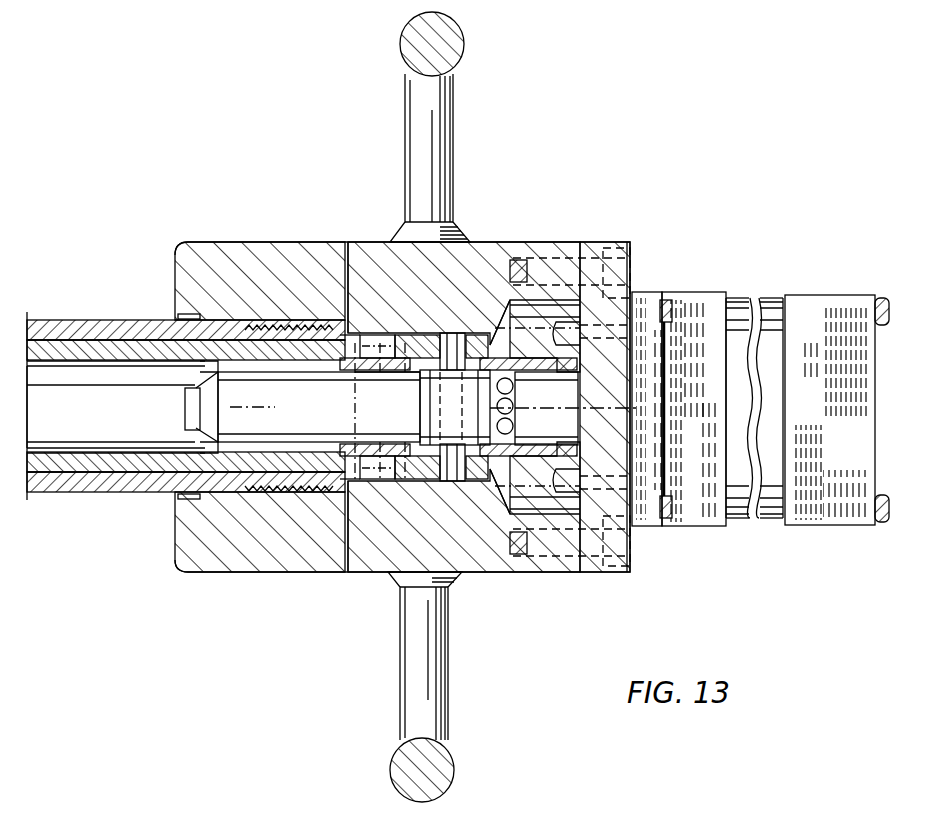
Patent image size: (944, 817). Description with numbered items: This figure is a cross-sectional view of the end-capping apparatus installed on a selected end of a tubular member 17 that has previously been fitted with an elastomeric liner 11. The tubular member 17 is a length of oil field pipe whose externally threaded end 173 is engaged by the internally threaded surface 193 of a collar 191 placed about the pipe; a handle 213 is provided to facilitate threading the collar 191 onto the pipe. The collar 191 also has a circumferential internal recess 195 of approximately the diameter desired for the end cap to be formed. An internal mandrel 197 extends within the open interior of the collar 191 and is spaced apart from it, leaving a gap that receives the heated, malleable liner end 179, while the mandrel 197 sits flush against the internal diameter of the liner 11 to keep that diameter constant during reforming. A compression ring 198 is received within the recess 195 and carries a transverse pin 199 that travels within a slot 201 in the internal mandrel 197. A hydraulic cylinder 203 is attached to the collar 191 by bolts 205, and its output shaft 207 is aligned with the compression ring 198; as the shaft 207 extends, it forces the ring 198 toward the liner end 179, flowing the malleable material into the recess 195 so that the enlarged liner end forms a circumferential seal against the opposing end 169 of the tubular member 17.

The liner 11 is at (133, 465).
The tubular member 17 is at (114, 324).
The end of the tubular member 169 is at (357, 442).
The externally threaded end 173 is at (252, 487).
The liner end 179 is at (387, 436).
The collar 191 is at (311, 242).
The internally threaded surface 193 is at (249, 330).
The circumferential internal recess 195 is at (407, 442).
The internal mandrel 197 is at (293, 432).
The compression ring 198 is at (414, 333).
The transverse pin 199 is at (465, 333).
The slot 201 is at (448, 578).
The hydraulic cylinder 203 is at (702, 298).
The bolts 205 is at (632, 295).
The output shaft 207 is at (548, 430).
The handle 213 is at (440, 152).